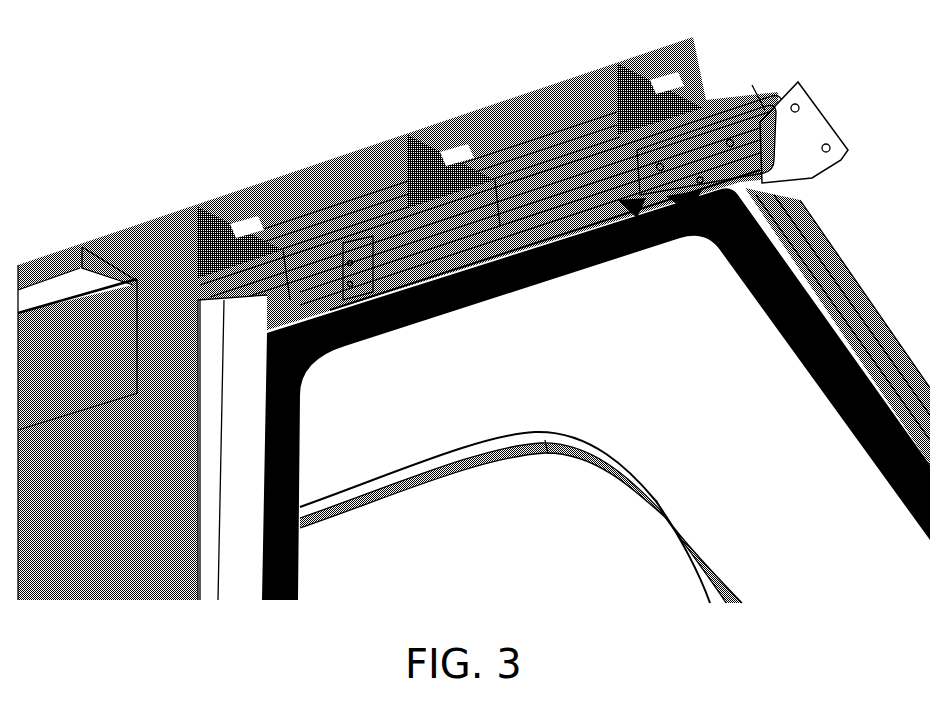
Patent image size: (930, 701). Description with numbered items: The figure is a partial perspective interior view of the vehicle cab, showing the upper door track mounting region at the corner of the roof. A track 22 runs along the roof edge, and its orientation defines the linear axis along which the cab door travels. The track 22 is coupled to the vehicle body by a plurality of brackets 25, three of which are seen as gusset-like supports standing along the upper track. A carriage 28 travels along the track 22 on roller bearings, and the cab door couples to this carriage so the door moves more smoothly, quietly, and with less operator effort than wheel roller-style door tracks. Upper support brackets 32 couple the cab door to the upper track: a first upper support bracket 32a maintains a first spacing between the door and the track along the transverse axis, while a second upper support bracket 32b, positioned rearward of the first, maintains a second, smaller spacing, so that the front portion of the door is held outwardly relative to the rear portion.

The track 22 is at (524, 173).
The brackets 25 is at (272, 214).
The carriage 28 is at (625, 152).
The upper support brackets 32 is at (655, 238).
The first upper support bracket 32a is at (673, 228).
The second upper support bracket 32b is at (350, 342).